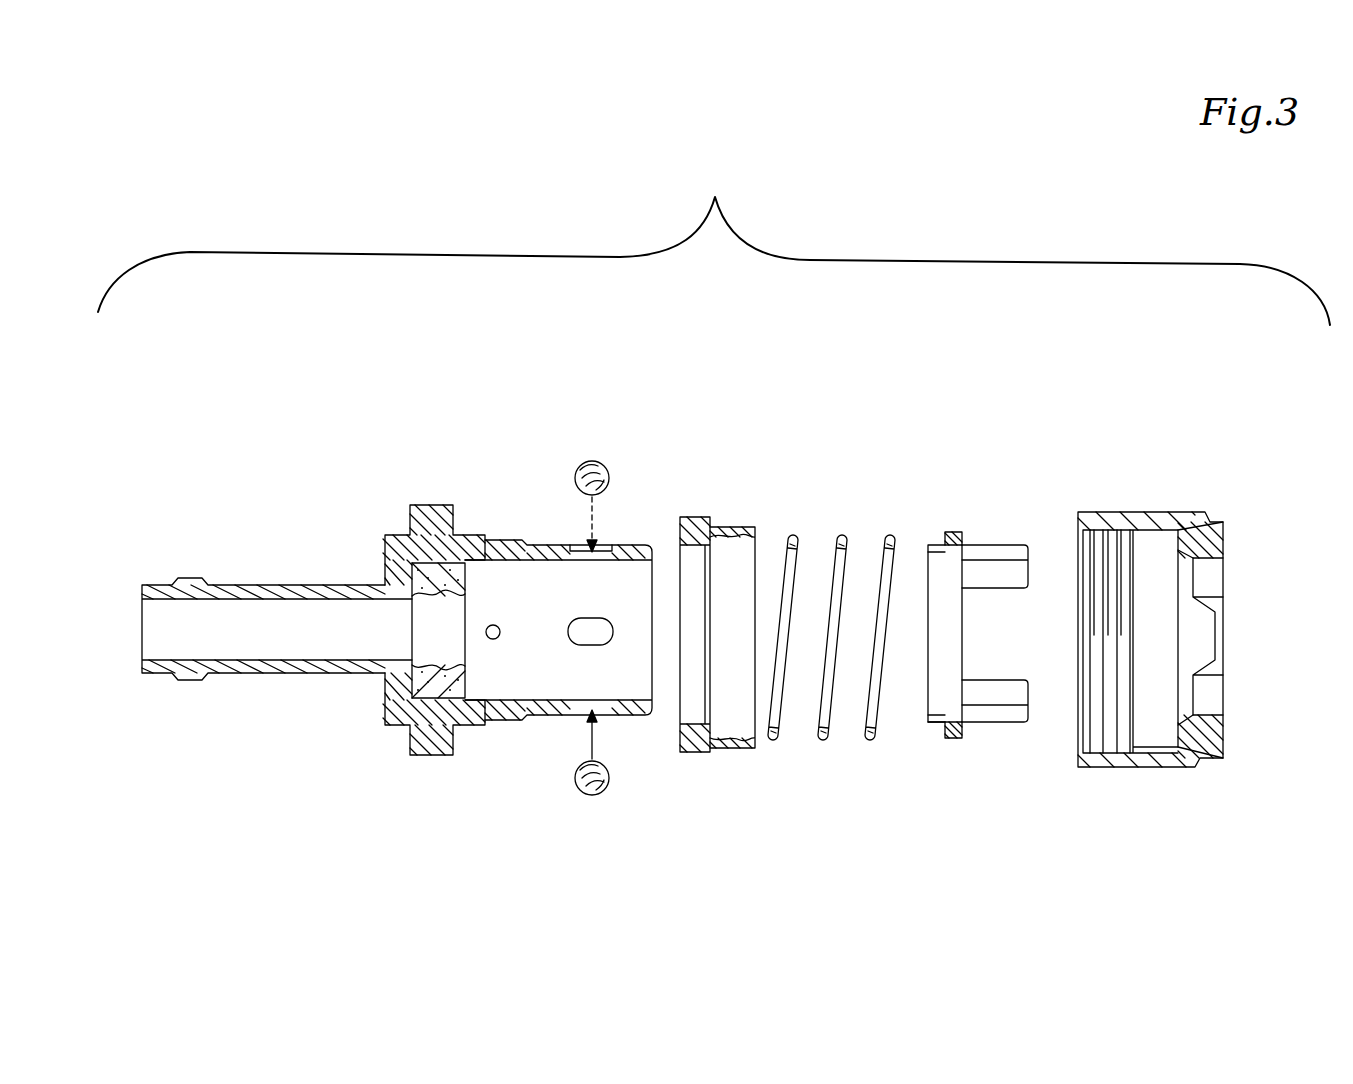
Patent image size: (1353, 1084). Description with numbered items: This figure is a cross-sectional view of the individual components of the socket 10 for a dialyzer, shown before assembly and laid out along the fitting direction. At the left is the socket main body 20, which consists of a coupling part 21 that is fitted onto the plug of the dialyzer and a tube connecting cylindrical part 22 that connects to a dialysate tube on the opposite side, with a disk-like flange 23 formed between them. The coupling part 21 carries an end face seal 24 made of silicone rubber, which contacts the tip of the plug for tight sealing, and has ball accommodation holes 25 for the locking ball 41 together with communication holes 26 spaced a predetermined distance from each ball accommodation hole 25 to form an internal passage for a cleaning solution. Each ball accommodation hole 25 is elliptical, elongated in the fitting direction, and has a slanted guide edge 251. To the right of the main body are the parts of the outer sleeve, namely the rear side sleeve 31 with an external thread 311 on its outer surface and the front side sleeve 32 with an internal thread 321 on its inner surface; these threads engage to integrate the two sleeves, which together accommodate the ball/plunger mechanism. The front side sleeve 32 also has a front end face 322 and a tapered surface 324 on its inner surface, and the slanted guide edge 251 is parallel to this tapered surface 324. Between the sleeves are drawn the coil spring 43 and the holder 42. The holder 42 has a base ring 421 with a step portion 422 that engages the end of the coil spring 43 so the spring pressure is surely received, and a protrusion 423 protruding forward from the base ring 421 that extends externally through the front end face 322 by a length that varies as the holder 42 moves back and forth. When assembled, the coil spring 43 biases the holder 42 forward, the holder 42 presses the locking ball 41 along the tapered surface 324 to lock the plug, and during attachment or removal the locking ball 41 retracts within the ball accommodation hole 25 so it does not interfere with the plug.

The socket 10 is at (1045, 428).
The socket main body 20 is at (388, 727).
The coupling part 21 is at (560, 617).
The tube connecting cylindrical part 22 is at (256, 592).
The disk-like flange 23 is at (430, 505).
The end face seal 24 is at (440, 692).
The ball accommodation hole 25 is at (612, 545).
The communication hole 26 is at (495, 552).
The slanted guide edge 251 is at (565, 551).
The rear side sleeve 31 is at (695, 752).
The external thread 311 is at (740, 750).
The front side sleeve 32 is at (1160, 768).
The internal thread 321 is at (1088, 722).
The front end face 322 is at (1230, 528).
The tapered surface 324 is at (1192, 522).
The locking ball 41 is at (598, 461).
The holder 42 is at (963, 538).
The base ring 421 is at (957, 740).
The step portion 422 is at (940, 740).
The protrusion 423 is at (1003, 722).
The coil spring 43 is at (841, 540).